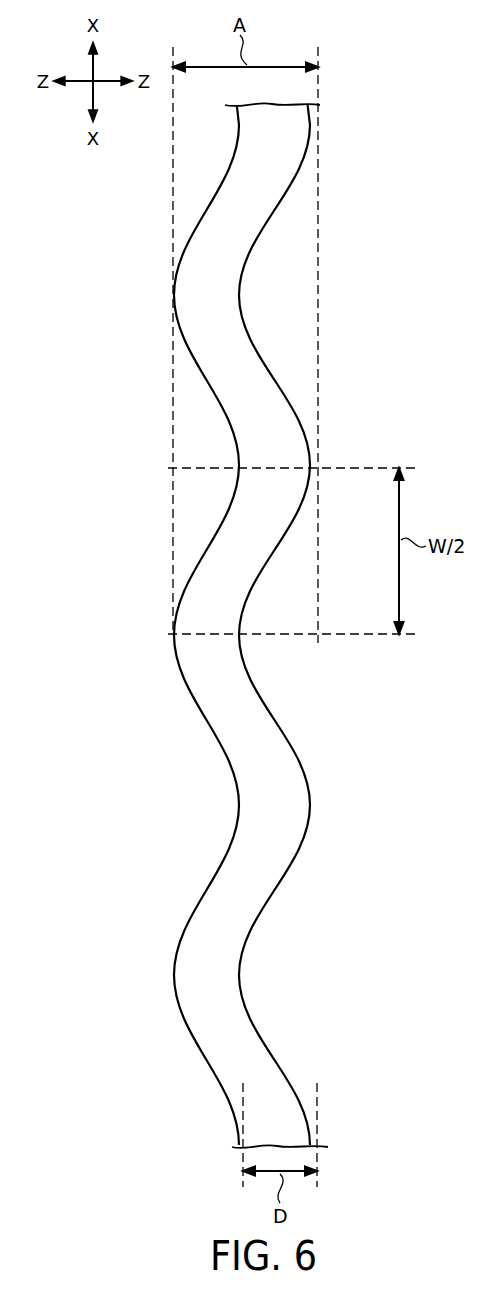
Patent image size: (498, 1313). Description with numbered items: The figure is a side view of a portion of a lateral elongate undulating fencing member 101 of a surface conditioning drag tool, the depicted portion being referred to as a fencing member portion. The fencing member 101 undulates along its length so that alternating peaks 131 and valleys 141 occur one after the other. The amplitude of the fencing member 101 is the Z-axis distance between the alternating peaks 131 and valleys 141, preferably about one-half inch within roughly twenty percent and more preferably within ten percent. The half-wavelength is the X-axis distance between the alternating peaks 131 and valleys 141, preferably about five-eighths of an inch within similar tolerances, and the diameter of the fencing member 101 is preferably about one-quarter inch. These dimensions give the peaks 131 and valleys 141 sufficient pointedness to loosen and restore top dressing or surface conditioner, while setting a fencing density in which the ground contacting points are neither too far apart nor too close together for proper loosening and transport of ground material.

The lateral elongate undulating fencing member 101 is at (400, 47).
The peaks 131 is at (322, 118).
The valleys 141 is at (172, 290).